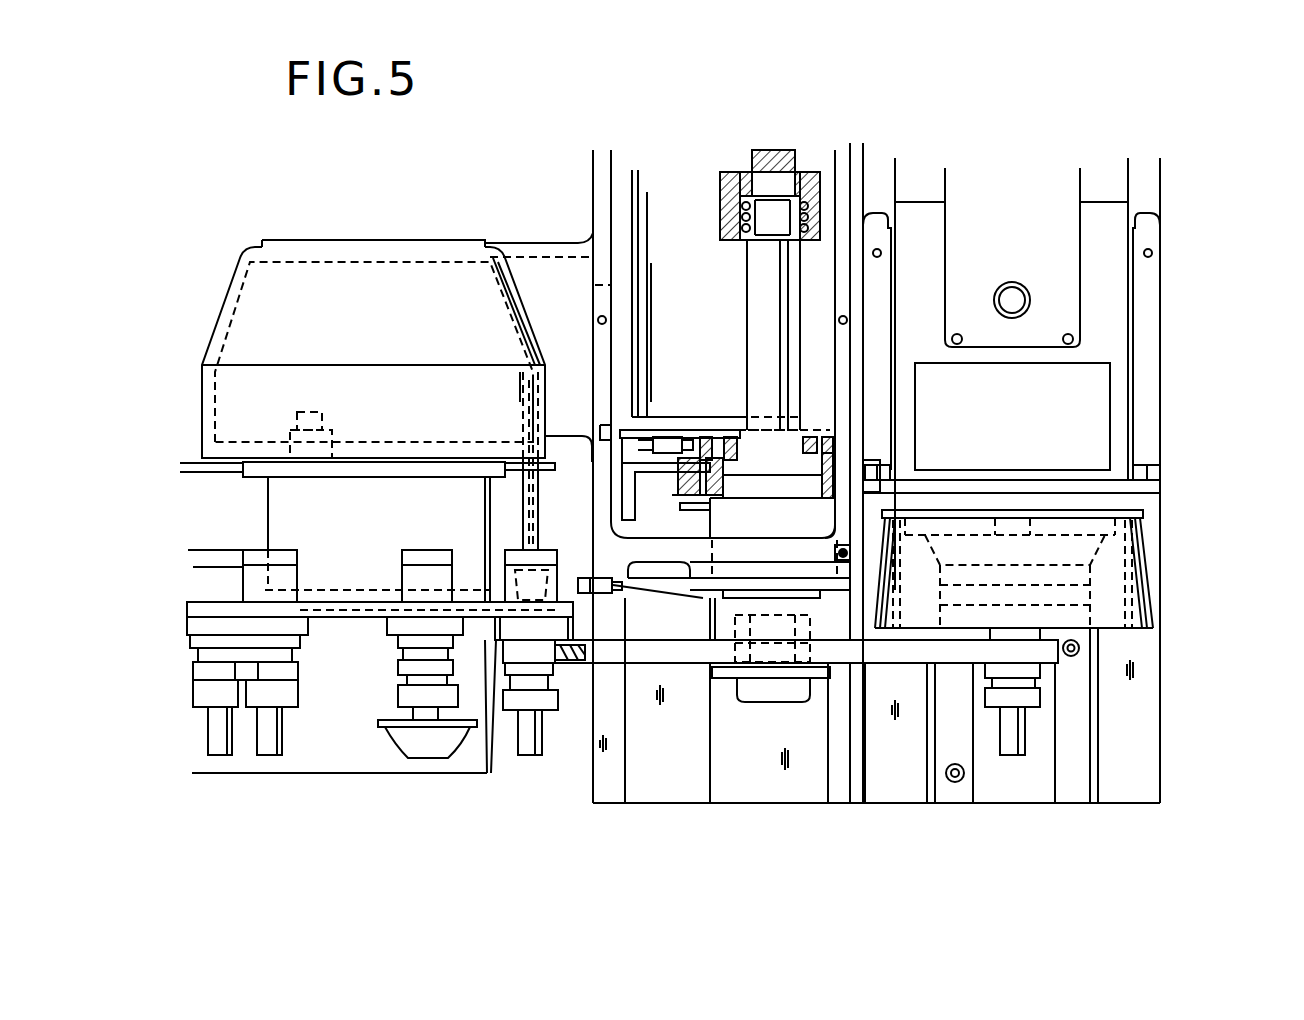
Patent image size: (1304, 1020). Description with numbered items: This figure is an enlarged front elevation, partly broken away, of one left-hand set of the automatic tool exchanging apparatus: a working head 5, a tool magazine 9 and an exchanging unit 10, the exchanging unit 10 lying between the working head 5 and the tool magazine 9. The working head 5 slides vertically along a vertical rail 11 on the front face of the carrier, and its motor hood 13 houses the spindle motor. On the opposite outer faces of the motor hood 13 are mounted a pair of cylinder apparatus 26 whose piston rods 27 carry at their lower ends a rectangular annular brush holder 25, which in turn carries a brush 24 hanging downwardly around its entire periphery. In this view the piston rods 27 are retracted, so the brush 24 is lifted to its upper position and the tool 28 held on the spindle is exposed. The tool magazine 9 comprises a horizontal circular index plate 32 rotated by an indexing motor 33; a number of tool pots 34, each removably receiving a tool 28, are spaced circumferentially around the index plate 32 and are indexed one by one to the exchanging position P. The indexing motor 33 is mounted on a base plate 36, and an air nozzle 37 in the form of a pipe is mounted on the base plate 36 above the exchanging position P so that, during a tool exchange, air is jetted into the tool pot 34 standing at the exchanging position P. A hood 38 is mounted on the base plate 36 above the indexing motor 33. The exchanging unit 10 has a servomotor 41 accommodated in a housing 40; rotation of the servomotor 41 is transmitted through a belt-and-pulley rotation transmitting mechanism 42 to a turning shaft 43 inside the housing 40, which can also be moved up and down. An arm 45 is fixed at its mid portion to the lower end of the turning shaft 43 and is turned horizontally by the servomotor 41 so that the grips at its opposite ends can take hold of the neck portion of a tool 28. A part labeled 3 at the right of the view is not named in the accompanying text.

The machine base 3 is at (1168, 687).
The working head 5 is at (1125, 388).
The tool magazine 9 is at (358, 348).
The exchanging unit 10 is at (588, 214).
The vertical rail 11 is at (947, 737).
The motor hood 13 is at (1112, 290).
The brush 24 is at (1150, 572).
The brush holder 25 is at (1072, 493).
The cylinder apparatus 26 is at (882, 270).
The piston rod 27 is at (897, 470).
The tool 28 is at (270, 697).
The index plate 32 is at (357, 620).
The indexing motor 33 is at (268, 520).
The tool pot 34 is at (488, 773).
The base plate 36 is at (523, 455).
The air nozzle 37 is at (518, 545).
The hood 38 is at (242, 343).
The housing 40 is at (597, 185).
The servomotor 41 is at (633, 278).
The belt-and-pulley rotation transmitting mechanism 42 is at (736, 418).
The turning shaft 43 is at (763, 315).
The arm 45 is at (840, 665).
The exchanging position P is at (518, 550).